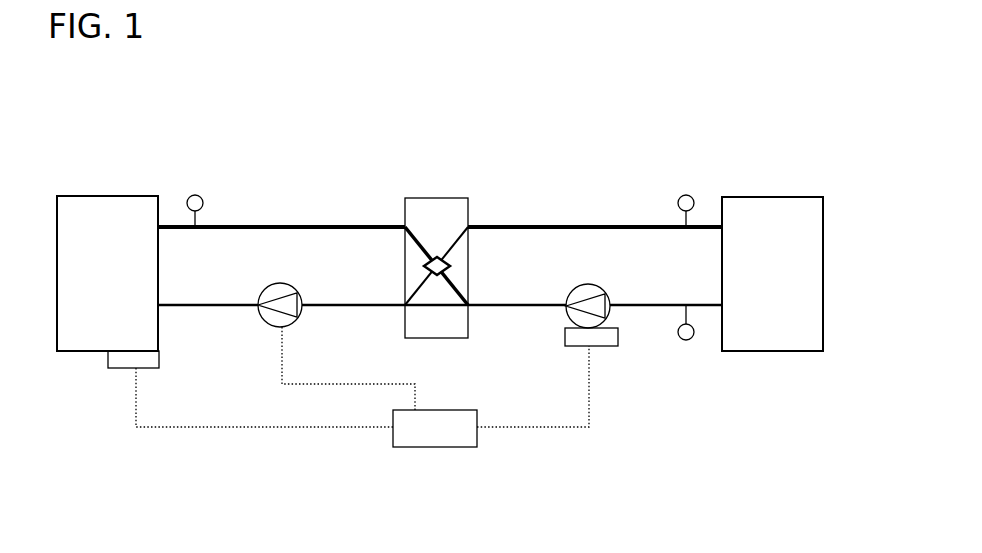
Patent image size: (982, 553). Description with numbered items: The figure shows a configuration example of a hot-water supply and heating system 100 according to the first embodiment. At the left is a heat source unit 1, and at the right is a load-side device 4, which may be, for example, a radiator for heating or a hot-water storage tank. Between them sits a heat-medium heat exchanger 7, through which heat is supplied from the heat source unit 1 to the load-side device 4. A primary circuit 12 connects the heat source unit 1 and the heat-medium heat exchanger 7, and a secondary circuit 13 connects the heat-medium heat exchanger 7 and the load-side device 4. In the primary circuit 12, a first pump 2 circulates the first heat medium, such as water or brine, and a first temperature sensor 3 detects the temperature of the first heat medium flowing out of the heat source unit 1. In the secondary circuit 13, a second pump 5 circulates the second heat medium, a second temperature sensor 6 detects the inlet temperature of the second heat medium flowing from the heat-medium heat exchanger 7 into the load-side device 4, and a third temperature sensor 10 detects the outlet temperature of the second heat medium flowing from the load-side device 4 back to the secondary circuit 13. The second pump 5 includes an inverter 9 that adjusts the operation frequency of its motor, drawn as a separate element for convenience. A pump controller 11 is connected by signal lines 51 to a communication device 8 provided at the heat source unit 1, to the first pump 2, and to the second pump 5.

The hot-water supply and heating system 100 is at (551, 151).
The heat source unit 1 is at (110, 196).
The first pump 2 is at (296, 288).
The first temperature sensor 3 is at (198, 196).
The load-side device 4 is at (776, 197).
The second pump 5 is at (604, 290).
The second temperature sensor 6 is at (687, 195).
The heat-medium heat exchanger 7 is at (432, 198).
The communication device 8 is at (160, 351).
The inverter 9 is at (565, 339).
The third temperature sensor 10 is at (684, 340).
The pump controller 11 is at (443, 410).
The primary circuit 12 is at (292, 225).
The secondary circuit 13 is at (572, 225).
The signal lines 51 is at (227, 425).